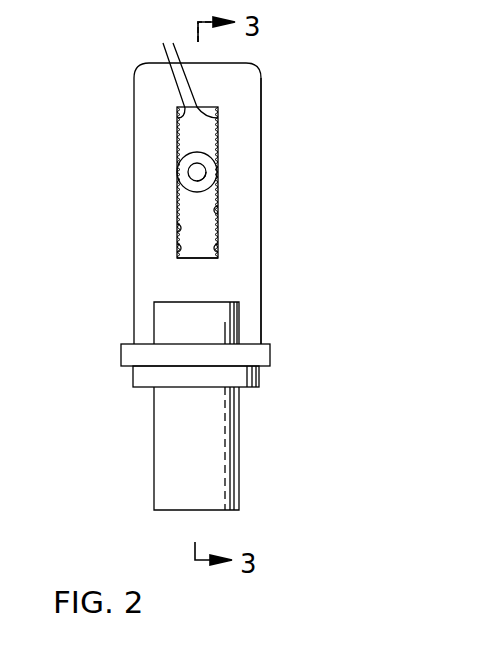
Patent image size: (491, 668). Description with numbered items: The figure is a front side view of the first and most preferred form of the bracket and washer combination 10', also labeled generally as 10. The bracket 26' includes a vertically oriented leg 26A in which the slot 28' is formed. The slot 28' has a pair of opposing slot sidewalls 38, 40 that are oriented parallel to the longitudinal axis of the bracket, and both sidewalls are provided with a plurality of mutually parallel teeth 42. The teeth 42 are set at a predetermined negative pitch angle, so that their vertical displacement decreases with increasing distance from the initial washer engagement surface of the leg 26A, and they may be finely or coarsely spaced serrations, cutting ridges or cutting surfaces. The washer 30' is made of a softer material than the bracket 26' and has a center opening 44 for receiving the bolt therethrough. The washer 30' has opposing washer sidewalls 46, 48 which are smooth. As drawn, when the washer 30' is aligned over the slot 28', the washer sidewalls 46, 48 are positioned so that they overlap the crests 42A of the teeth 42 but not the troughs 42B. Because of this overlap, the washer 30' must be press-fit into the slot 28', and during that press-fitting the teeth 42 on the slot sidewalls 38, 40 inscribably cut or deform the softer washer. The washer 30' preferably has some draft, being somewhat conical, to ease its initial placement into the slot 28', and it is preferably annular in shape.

The optical connector assembly 10 is at (154, 203).
The bracket and washer combination 10' is at (322, 197).
The bracket 26' is at (308, 129).
The leg 26A is at (262, 275).
The slot 28' is at (136, 272).
The washer 30' is at (140, 182).
The slot sidewall 38 is at (218, 211).
The slot sidewall 40 is at (177, 228).
The teeth 42 is at (184, 69).
The crests 42A is at (218, 257).
The troughs 42B is at (218, 236).
The center opening 44 is at (200, 165).
The washer sidewall 46 is at (217, 183).
The washer sidewall 48 is at (177, 183).